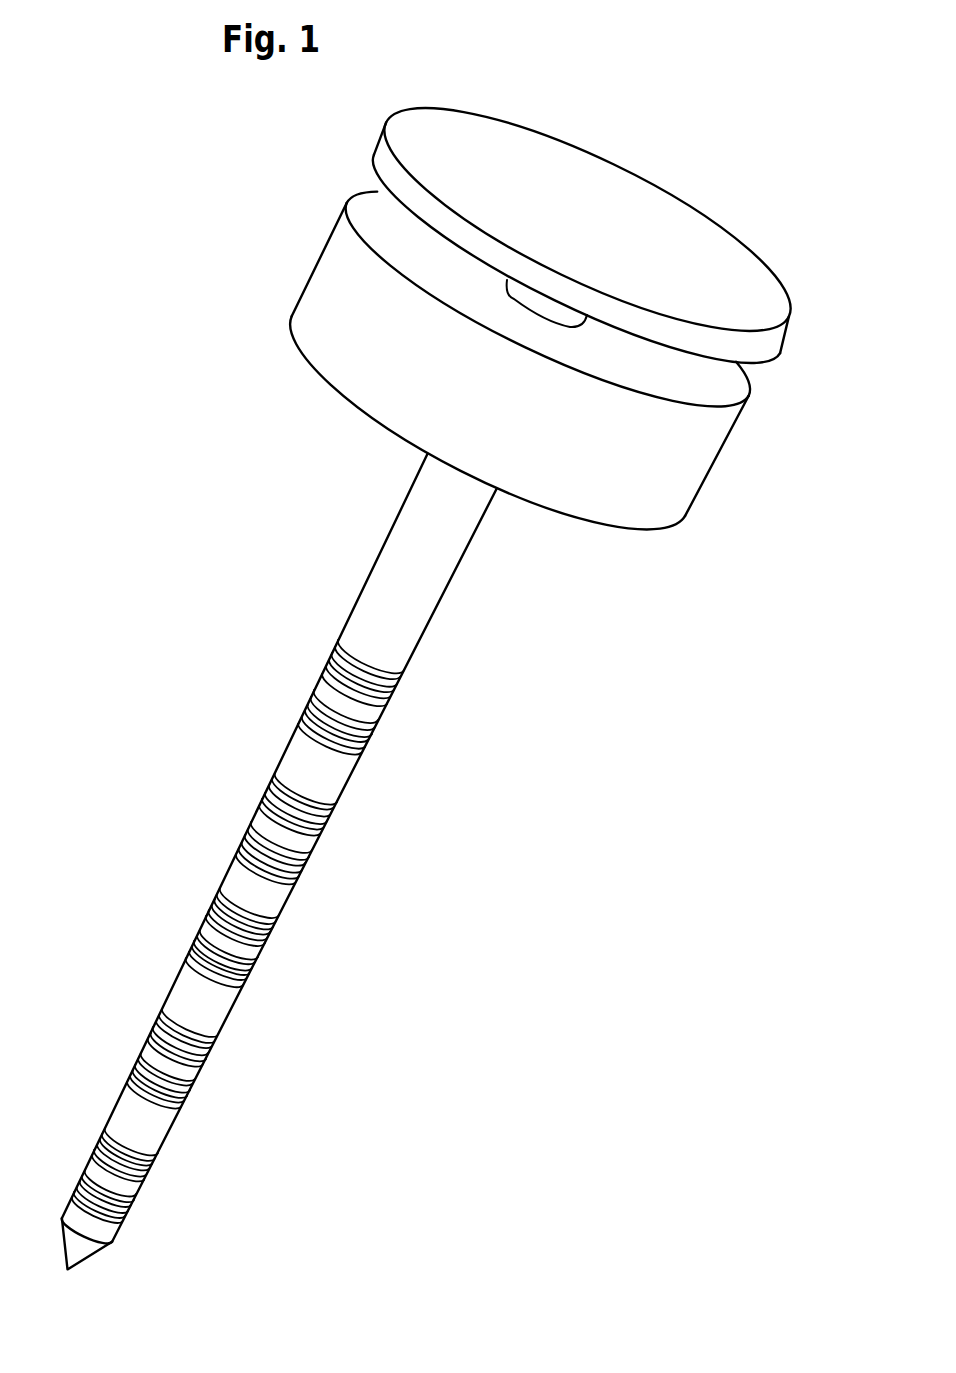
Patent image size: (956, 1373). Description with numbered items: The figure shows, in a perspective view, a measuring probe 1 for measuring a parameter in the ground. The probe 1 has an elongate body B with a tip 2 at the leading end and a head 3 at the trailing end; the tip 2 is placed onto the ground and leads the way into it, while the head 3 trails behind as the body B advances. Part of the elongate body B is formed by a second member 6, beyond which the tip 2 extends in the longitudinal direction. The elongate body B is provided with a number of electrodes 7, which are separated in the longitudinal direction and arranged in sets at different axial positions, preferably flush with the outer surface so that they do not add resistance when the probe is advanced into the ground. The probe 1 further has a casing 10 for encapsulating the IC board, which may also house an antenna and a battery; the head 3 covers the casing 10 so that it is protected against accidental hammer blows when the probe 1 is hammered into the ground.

The measuring probe 1 is at (222, 252).
The tip 2 is at (83, 1253).
The head 3 is at (712, 245).
The second member 6 is at (192, 995).
The electrodes 7 is at (384, 681).
The casing 10 is at (692, 472).
The elongate body B is at (272, 728).